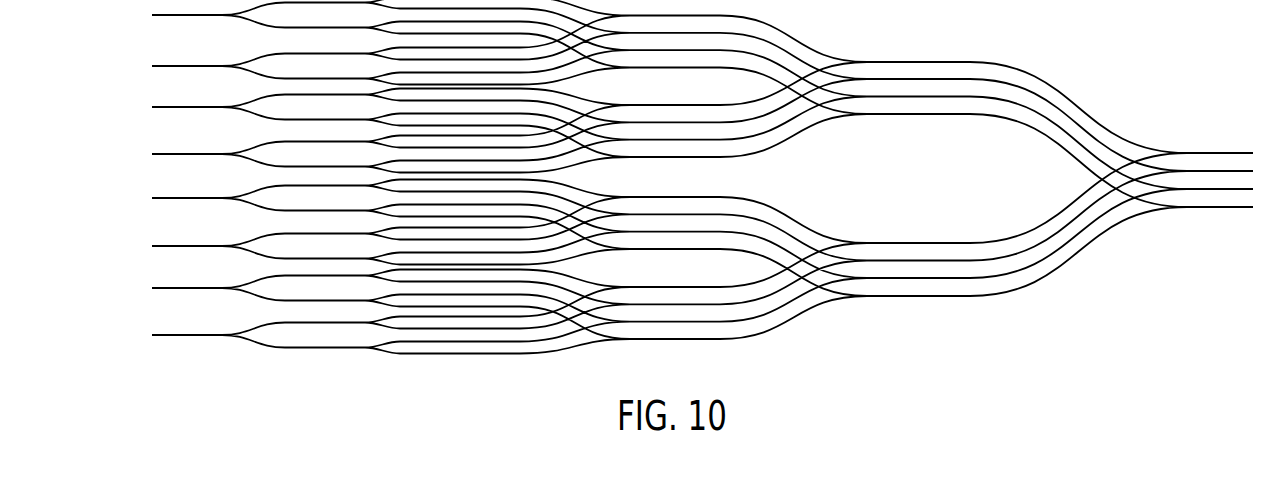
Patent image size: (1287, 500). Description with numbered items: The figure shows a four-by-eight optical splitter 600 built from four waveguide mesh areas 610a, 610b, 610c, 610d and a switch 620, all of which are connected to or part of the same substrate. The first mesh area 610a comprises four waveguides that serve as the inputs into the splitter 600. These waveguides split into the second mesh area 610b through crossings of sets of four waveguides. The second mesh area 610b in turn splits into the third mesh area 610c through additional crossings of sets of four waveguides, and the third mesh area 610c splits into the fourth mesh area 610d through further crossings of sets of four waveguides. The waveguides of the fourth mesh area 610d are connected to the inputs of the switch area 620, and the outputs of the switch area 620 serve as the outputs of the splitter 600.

The splitter 600 is at (1191, 116).
The first mesh area 610a is at (1176, 239).
The second mesh area 610b is at (1004, 310).
The third mesh area 610c is at (745, 356).
The fourth mesh area 610d is at (449, 374).
The switch 620 is at (253, 357).